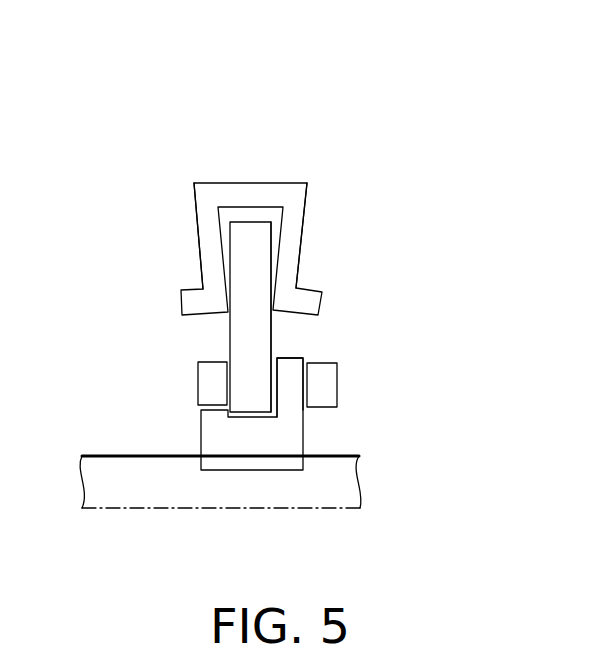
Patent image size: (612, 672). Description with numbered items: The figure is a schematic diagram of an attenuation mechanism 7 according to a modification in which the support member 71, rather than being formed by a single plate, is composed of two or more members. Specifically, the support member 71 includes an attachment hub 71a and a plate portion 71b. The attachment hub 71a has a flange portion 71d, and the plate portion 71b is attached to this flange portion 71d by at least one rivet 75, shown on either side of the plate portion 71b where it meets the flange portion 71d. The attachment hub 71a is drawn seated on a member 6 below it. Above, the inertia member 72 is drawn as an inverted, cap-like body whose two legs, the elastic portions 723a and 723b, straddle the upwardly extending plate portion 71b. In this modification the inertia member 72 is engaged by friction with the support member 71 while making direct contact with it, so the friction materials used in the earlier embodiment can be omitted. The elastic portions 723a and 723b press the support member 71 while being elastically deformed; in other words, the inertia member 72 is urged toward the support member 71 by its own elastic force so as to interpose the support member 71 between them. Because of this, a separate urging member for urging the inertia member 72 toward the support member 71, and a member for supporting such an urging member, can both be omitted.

The attenuation mechanism 7 is at (307, 118).
The inertia member 72 is at (200, 183).
The elastic portion 723a is at (198, 263).
The elastic portion 723b is at (300, 260).
The support member 71 is at (230, 348).
The attachment hub 71a is at (201, 433).
The plate portion 71b is at (267, 343).
The flange portion 71d is at (290, 363).
The rivet 75 is at (338, 393).
The substrate plate 6 is at (348, 478).